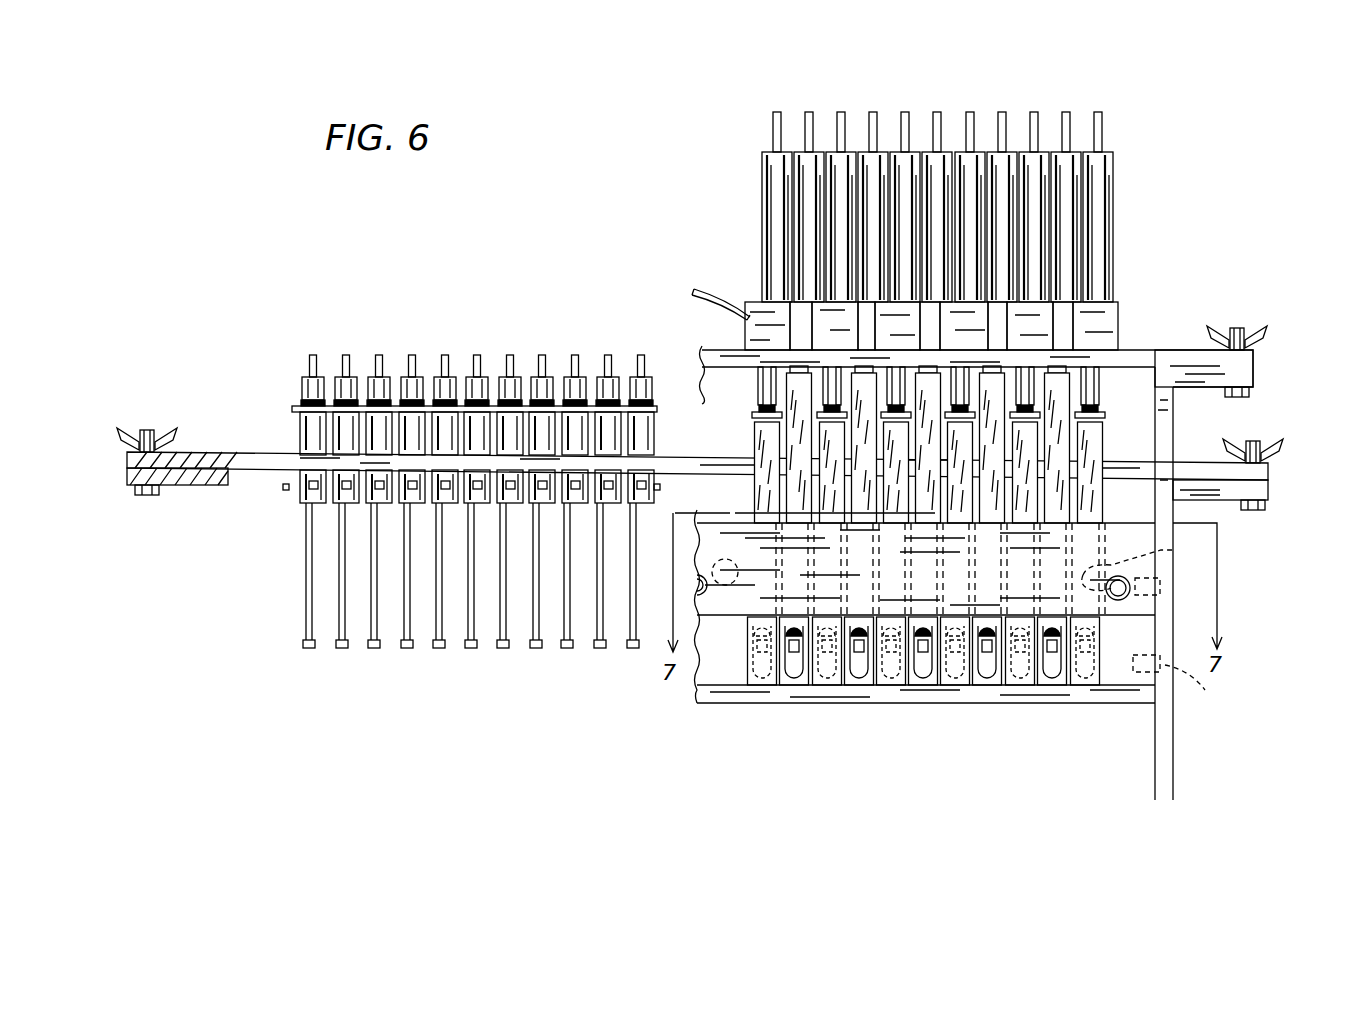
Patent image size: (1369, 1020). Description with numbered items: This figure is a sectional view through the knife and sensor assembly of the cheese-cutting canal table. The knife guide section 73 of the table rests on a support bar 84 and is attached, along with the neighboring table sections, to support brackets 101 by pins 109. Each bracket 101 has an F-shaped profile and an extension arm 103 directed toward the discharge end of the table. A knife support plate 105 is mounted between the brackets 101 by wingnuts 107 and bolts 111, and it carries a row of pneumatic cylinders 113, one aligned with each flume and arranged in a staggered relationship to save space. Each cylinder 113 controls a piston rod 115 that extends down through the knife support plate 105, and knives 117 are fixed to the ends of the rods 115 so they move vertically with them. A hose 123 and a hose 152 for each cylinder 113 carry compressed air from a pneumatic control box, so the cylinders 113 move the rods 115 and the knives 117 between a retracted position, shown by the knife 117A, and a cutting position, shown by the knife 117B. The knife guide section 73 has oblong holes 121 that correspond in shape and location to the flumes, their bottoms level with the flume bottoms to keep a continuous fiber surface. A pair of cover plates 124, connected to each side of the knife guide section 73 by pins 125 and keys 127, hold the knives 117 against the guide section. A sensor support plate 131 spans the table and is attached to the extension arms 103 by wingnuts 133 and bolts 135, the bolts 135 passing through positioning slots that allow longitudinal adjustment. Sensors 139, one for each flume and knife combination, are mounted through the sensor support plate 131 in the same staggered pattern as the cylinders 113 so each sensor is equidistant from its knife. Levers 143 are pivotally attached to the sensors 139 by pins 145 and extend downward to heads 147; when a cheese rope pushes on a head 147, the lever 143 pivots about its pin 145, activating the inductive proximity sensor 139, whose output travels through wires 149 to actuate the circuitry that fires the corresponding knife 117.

The knife guide section 73 is at (725, 665).
The support bar 84 is at (1095, 705).
The support brackets 101 is at (1173, 745).
The extension arm 103 is at (218, 486).
The knife support plate 105 is at (1180, 350).
The wingnuts 107 is at (1256, 324).
The pins 109 is at (1190, 679).
The bolts 111 is at (1250, 393).
The pneumatic cylinders 113 is at (1067, 252).
The piston rod 115 is at (705, 354).
The knives 117 is at (928, 512).
The knife in retracted position 117A is at (800, 392).
The knife in cutting position 117B is at (760, 440).
The oblong holes 121 is at (770, 685).
The hose 123 is at (900, 112).
The cover plates 124 is at (1125, 540).
The pins 125 is at (1130, 592).
The keys 127 is at (1148, 565).
The sensor support plate 131 is at (246, 452).
The wingnuts 133 is at (126, 438).
The bolts 135 is at (150, 495).
The sensors 139 is at (310, 424).
The levers 143 is at (423, 617).
The pins 145 is at (402, 488).
The head 147 is at (375, 648).
The wires 149 is at (445, 355).
The hose 152 is at (710, 312).